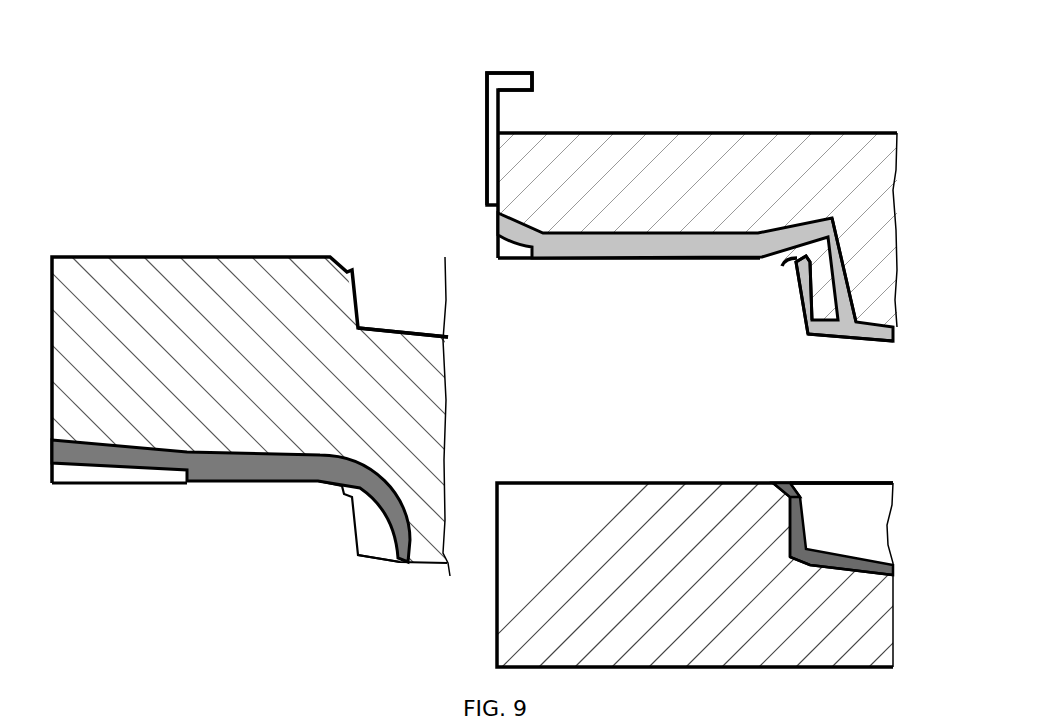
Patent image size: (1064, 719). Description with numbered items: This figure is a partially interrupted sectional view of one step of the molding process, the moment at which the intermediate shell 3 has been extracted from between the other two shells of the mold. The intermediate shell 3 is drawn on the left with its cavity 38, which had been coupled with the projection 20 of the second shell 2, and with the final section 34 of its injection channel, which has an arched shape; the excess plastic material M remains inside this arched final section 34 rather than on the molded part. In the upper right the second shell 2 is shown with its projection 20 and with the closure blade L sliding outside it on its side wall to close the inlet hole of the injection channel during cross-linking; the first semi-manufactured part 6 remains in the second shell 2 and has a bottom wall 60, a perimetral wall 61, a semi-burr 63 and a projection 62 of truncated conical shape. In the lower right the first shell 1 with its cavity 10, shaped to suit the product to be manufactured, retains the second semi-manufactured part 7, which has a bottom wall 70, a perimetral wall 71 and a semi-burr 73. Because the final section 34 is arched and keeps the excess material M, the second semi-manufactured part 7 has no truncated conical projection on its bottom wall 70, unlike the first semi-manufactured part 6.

The first shell 1 is at (727, 627).
The second shell 2 is at (655, 160).
The intermediate shell 3 is at (120, 307).
The first semi-manufactured part 6 is at (898, 333).
The second semi-manufactured part 7 is at (900, 567).
The cavity 10 is at (858, 513).
The projection 20 is at (878, 293).
The final section of the injection channel 34 is at (382, 477).
The cavity 38 is at (393, 287).
The bottom wall 60 is at (825, 335).
The perimetral wall 61 is at (800, 307).
The projection 62 is at (845, 260).
The semi-burr 63 is at (795, 265).
The bottom wall 70 is at (857, 578).
The perimetral wall 71 is at (790, 553).
The semi-burr 73 is at (787, 495).
The closure blade L is at (489, 149).
The excess plastic material M is at (400, 540).